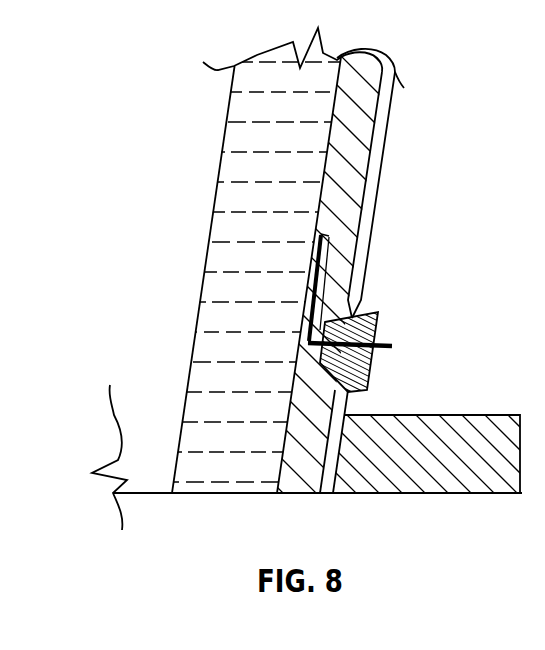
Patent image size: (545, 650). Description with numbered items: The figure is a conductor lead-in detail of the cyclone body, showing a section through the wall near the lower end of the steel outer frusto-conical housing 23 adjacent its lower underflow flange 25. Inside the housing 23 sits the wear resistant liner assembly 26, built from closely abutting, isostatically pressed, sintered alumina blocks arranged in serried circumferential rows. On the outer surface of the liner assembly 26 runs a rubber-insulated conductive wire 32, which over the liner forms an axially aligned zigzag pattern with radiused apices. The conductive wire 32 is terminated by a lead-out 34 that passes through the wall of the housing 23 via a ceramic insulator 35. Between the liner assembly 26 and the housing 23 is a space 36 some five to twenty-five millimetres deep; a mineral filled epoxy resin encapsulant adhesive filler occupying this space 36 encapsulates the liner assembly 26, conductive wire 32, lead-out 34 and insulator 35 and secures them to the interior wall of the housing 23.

The frusto-conical housing 23 is at (374, 167).
The underflow flange 25 is at (460, 470).
The liner assembly 26 is at (228, 242).
The conductive wire 32 is at (355, 258).
The lead-out 34 is at (390, 347).
The ceramic insulator 35 is at (378, 313).
The space 36 is at (390, 112).